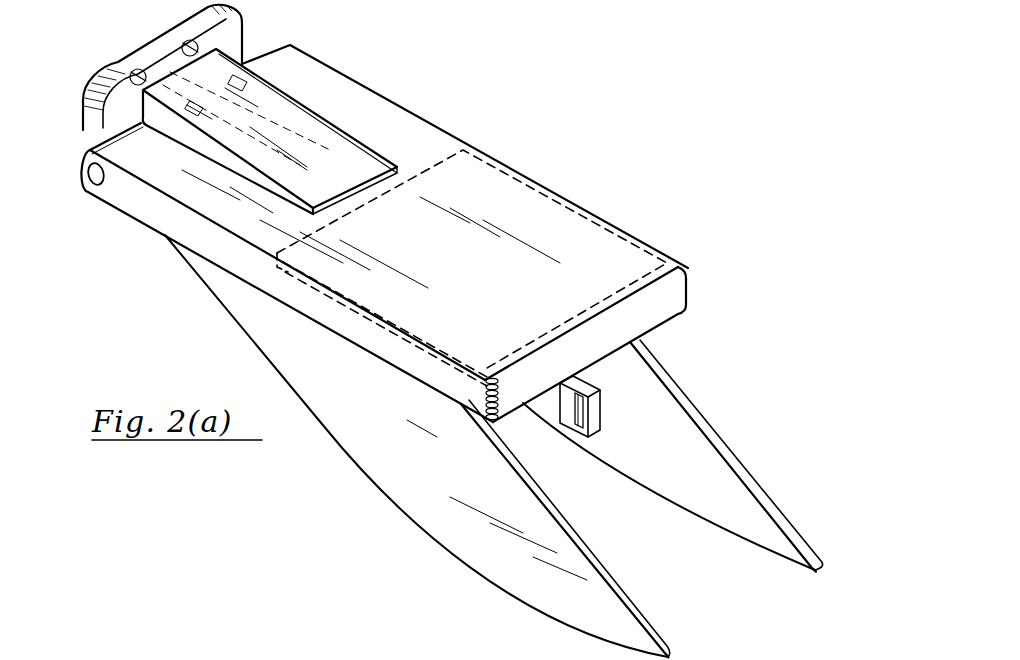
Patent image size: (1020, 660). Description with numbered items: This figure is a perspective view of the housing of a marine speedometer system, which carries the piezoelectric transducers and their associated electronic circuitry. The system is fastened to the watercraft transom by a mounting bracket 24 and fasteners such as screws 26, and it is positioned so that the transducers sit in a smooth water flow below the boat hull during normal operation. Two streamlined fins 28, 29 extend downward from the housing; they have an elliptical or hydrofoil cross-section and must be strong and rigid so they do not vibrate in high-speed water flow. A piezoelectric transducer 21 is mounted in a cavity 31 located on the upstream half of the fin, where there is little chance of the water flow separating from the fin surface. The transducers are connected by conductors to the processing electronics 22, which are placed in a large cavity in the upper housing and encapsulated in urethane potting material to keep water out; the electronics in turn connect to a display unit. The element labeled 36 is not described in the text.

The piezoelectric transducer 21 is at (558, 433).
The processing electronics 22 is at (543, 217).
The mounting bracket 24 is at (273, 93).
The screws 26 is at (150, 80).
The streamlined fin 28 is at (402, 497).
The streamlined fin 29 is at (732, 490).
The cavity 31 is at (587, 442).
The end wall 36 is at (672, 295).